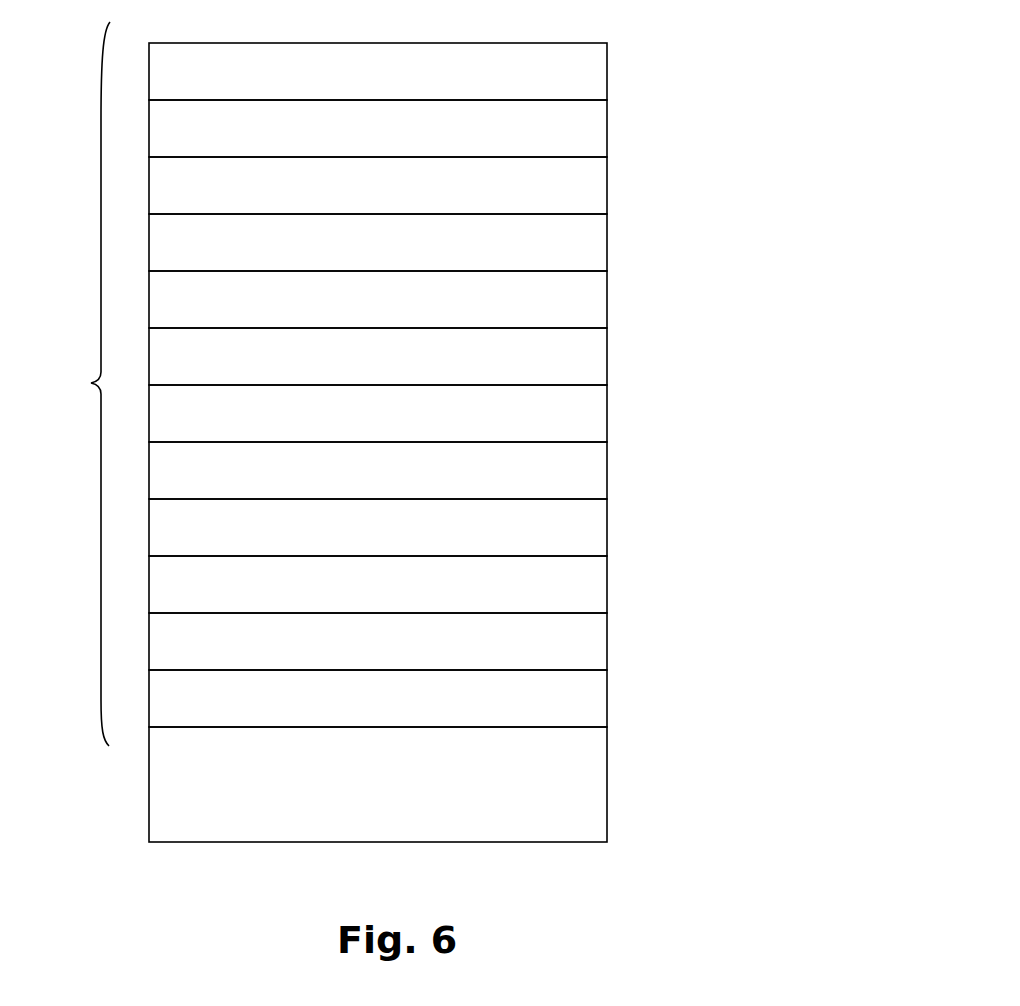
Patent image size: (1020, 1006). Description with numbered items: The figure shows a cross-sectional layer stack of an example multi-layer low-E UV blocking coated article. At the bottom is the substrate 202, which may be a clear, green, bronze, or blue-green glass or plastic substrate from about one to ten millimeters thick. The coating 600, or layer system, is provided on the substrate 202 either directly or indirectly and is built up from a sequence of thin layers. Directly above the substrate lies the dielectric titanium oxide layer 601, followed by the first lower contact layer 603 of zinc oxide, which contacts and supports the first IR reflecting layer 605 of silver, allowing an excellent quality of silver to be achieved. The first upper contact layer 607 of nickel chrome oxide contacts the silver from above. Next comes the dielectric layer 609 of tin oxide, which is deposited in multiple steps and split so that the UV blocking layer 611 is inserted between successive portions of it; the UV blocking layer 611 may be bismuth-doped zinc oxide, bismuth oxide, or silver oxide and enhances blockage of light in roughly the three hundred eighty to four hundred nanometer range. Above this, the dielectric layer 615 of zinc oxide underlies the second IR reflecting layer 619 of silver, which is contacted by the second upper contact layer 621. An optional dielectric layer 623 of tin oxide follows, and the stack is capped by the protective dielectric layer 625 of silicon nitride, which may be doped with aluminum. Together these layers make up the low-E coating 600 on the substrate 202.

The coating 600 is at (62, 384).
The protective dielectric layer 625 is at (607, 71).
The dielectric layer 623 is at (607, 128).
The second upper contact layer 621 is at (607, 185).
The second IR reflecting layer 619 is at (607, 242).
The dielectric layer 615 is at (607, 299).
The dielectric layer 609 is at (607, 356).
The UV blocking layer 611 is at (607, 413).
The first upper contact layer 607 is at (607, 527).
The first IR reflecting layer 605 is at (607, 584).
The first lower contact layer 603 is at (607, 641).
The dielectric titanium oxide layer 601 is at (607, 698).
The substrate 202 is at (607, 783).